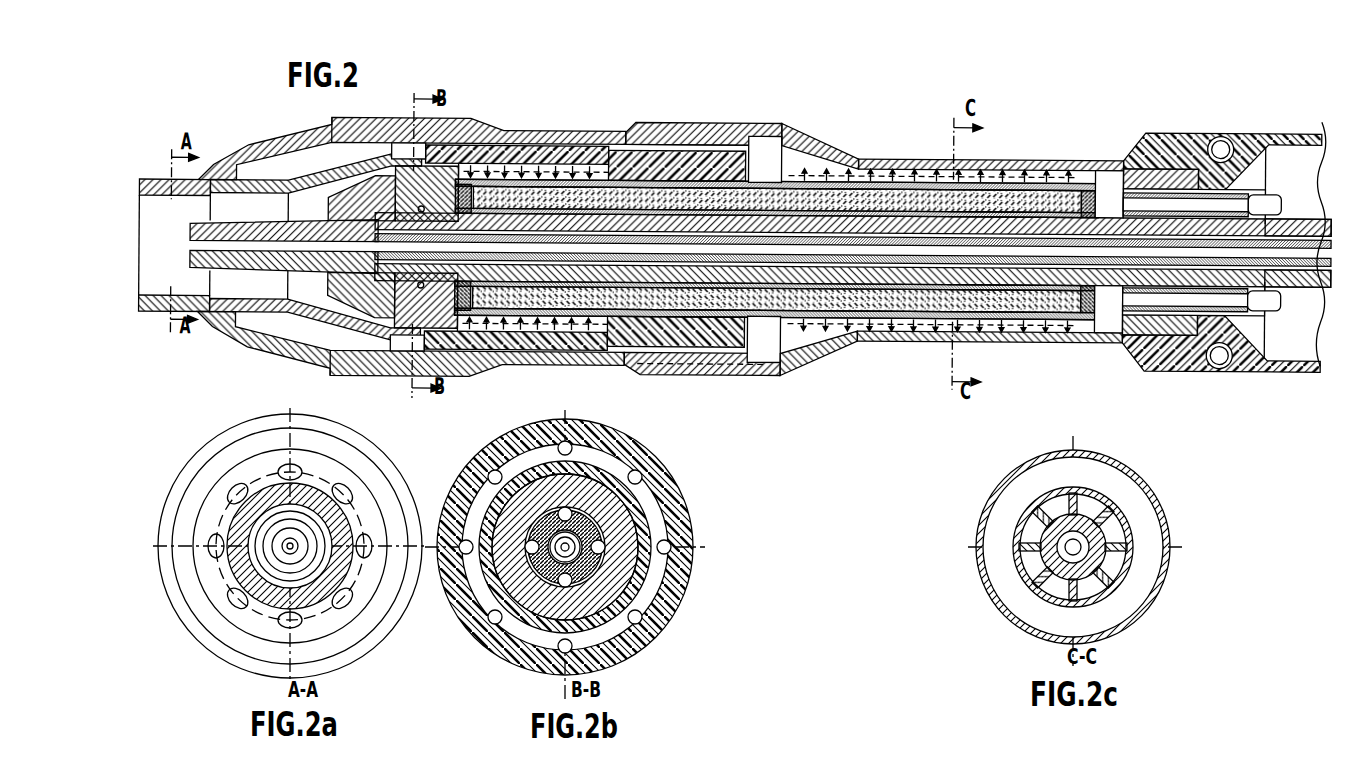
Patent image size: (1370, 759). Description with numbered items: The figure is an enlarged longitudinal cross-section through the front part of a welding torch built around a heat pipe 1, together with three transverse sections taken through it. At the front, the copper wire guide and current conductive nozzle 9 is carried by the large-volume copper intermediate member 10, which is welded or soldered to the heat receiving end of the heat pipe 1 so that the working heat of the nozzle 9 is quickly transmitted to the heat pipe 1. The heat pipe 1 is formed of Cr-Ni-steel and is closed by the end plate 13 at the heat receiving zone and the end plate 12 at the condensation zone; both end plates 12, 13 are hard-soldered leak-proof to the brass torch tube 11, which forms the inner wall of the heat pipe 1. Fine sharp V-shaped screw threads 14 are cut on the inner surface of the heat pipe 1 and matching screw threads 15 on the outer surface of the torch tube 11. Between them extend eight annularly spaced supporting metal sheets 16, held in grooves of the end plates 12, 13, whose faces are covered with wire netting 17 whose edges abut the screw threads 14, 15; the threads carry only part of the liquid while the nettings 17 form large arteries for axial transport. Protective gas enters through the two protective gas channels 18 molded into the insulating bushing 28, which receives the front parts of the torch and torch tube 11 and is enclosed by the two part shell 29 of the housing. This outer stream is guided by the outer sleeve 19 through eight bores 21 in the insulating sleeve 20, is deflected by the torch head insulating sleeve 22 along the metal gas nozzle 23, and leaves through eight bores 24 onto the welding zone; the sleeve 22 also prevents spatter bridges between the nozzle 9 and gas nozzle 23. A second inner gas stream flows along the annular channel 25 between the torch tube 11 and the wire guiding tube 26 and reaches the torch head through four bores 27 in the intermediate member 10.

In FIG. 2, the heat pipe 1 is at (810, 178).
In FIG. 2, the wire guide and current conductive nozzle 9 is at (183, 222).
In FIG. 2, the intermediate member 10 is at (563, 310).
In FIG. 2b, the intermediate member 10 is at (622, 552).
In FIG. 2, the torch tube 11 is at (960, 217).
In FIG. 2b, the torch tube 11 is at (532, 562).
In FIG. 2, the end plate 12 is at (1085, 183).
In FIG. 2, the end plate 13 is at (467, 170).
In FIG. 2, the screw threads 14 is at (868, 300).
In FIG. 2c, the screw threads 14 is at (1034, 482).
In FIG. 2, the screw threads 15 is at (960, 287).
In FIG. 2c, the screw threads 15 is at (1085, 504).
In FIG. 2, the supporting metal sheets 16 is at (1073, 312).
In FIG. 2c, the supporting metal sheets 16 is at (1118, 527).
In FIG. 2, the wire netting 17 is at (815, 293).
In FIG. 2c, the wire netting 17 is at (1028, 532).
In FIG. 2, the protective gas channels 18 is at (1262, 187).
In FIG. 2, the outer sleeve 19 is at (753, 123).
In FIG. 2, the insulating sleeve 20 is at (632, 115).
In FIG. 2a, the insulating sleeve 20 is at (360, 444).
In FIG. 2, the bores 21 is at (707, 347).
In FIG. 2b, the bores 21 is at (662, 534).
In FIG. 2, the torch head insulating sleeve 22 is at (300, 300).
In FIG. 2, the metal gas nozzle 23 is at (277, 133).
In FIG. 2a, the metal gas nozzle 23 is at (310, 587).
In FIG. 2, the bores 24 is at (205, 307).
In FIG. 2a, the bores 24 is at (287, 465).
In FIG. 2, the annular channel 25 is at (1318, 235).
In FIG. 2b, the annular channel 25 is at (635, 582).
In FIG. 2, the tube for guiding the welding wire 26 is at (1037, 235).
In FIG. 2b, the tube for guiding the welding wire 26 is at (609, 525).
In FIG. 2, the bores 27 is at (413, 203).
In FIG. 2b, the bores 27 is at (565, 502).
In FIG. 2, the bushing 28 is at (1130, 170).
In FIG. 2, the two part shell 29 is at (1192, 130).